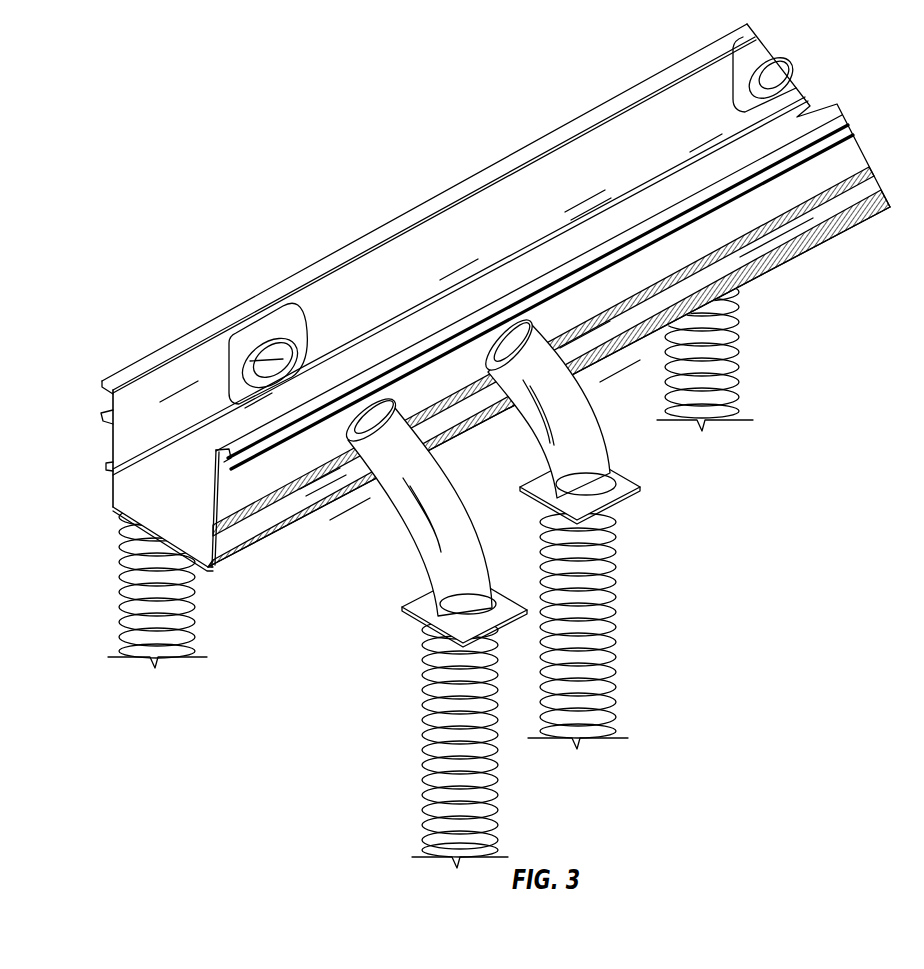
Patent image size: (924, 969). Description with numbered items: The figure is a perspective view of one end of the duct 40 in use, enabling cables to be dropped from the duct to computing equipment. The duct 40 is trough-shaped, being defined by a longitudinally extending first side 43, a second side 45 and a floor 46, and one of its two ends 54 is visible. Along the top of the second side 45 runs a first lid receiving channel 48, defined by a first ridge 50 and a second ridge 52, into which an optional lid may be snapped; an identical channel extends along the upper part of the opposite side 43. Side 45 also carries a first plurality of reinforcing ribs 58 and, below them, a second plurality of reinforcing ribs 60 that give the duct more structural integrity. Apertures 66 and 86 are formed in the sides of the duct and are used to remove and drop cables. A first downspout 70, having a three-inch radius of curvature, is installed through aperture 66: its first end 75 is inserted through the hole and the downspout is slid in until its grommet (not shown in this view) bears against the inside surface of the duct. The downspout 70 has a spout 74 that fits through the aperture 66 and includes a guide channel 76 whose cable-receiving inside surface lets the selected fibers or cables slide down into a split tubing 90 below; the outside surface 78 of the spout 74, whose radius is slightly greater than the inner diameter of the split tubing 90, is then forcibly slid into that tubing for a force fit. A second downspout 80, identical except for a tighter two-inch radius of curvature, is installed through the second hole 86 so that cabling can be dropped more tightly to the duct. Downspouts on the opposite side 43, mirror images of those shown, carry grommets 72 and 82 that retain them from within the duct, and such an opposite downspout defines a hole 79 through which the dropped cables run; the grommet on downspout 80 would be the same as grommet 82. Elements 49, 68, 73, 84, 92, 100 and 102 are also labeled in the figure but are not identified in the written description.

The duct 40 is at (471, 309).
The first side 43 is at (394, 295).
The second side 45 is at (692, 257).
The floor 46 is at (204, 570).
The first lid receiving channel 48 is at (214, 457).
The top lip 49 is at (105, 394).
The first ridge 50 is at (279, 435).
The second ridge 52 is at (246, 468).
The end 54 is at (105, 466).
The first plurality of reinforcing ribs 58 is at (838, 200).
The second plurality of reinforcing ribs 60 is at (820, 238).
The aperture 66 is at (393, 401).
The elbow tube 68 is at (583, 404).
The first downspout 70 is at (429, 521).
The grommet 72 is at (297, 326).
The collar 73 is at (352, 440).
The spout 74 is at (482, 528).
The first end 75 is at (433, 610).
The guide channel 76 is at (460, 553).
The outside surface 78 is at (400, 510).
The hole 79 is at (254, 350).
The second downspout 80 is at (600, 411).
The grommet 82 is at (760, 58).
The flange 84 is at (538, 432).
The second hole 86 is at (534, 326).
The split tubing 90 is at (428, 733).
The flange base 92 is at (437, 634).
The flexible conduit 100 is at (615, 614).
The flange base 102 is at (637, 487).